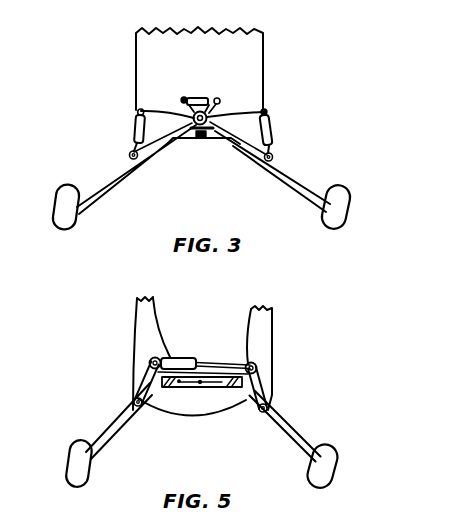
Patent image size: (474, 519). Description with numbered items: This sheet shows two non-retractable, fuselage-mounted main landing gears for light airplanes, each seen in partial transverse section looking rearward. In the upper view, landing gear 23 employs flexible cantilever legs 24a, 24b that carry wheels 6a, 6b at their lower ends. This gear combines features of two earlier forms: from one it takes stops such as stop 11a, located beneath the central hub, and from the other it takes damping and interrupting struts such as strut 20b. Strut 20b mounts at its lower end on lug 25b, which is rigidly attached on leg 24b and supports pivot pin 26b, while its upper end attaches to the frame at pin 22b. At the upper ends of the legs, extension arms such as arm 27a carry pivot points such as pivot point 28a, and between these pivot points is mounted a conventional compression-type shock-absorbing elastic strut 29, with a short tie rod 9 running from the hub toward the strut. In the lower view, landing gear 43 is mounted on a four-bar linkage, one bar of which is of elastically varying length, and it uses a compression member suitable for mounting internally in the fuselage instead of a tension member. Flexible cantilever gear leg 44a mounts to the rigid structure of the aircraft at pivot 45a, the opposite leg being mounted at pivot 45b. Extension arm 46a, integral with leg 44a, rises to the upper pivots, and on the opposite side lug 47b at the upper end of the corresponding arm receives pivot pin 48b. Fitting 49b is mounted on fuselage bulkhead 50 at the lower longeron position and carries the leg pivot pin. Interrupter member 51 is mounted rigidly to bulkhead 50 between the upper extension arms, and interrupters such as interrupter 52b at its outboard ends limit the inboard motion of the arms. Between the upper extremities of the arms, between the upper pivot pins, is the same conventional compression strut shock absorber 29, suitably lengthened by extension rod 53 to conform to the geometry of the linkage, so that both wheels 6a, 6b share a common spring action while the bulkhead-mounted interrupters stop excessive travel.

In FIG. 3, the wheel 6a is at (57, 194).
In FIG. 3, the wheel 6b is at (336, 207).
In FIG. 5, the wheel 6b is at (326, 447).
In FIG. 3, the tie rod 9 is at (218, 117).
In FIG. 3, the stop 11a is at (194, 140).
In FIG. 3, the damping and interrupting strut 20b is at (270, 122).
In FIG. 3, the pivot pin 22b is at (266, 112).
In FIG. 3, the landing gear 23 is at (76, 192).
In FIG. 3, the flexible cantilever leg 24a is at (108, 186).
In FIG. 3, the flexible cantilever leg 24b is at (267, 176).
In FIG. 3, the lug 25b is at (273, 155).
In FIG. 3, the pivot pin 26b is at (272, 160).
In FIG. 3, the extension arm 27a is at (183, 113).
In FIG. 3, the pivot point 28a is at (184, 97).
In FIG. 3, the compression-type shock-absorbing elastic strut 29 is at (201, 98).
In FIG. 5, the compression-type shock-absorbing elastic strut 29 is at (182, 358).
In FIG. 5, the landing gear 43 is at (85, 441).
In FIG. 5, the flexible cantilever gear leg 44a is at (99, 448).
In FIG. 5, the pivot 45a is at (146, 409).
In FIG. 5, the pivot 45b is at (269, 408).
In FIG. 5, the extension arm 46a is at (147, 369).
In FIG. 5, the lug 47b is at (257, 362).
In FIG. 5, the pivot pin 48b is at (258, 366).
In FIG. 5, the fitting 49b is at (269, 391).
In FIG. 5, the fuselage bulkhead 50 is at (158, 322).
In FIG. 5, the interrupter member 51 is at (182, 388).
In FIG. 5, the interrupter 52b is at (249, 405).
In FIG. 5, the extension rod 53 is at (222, 363).